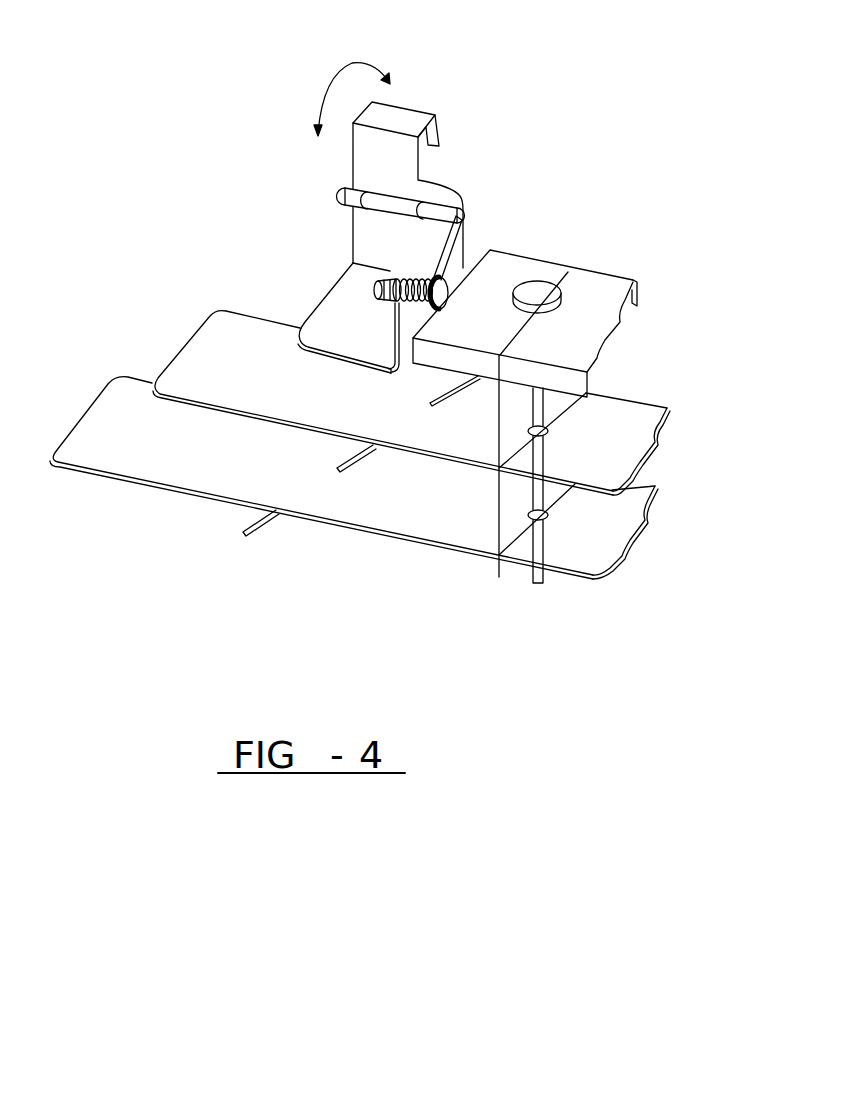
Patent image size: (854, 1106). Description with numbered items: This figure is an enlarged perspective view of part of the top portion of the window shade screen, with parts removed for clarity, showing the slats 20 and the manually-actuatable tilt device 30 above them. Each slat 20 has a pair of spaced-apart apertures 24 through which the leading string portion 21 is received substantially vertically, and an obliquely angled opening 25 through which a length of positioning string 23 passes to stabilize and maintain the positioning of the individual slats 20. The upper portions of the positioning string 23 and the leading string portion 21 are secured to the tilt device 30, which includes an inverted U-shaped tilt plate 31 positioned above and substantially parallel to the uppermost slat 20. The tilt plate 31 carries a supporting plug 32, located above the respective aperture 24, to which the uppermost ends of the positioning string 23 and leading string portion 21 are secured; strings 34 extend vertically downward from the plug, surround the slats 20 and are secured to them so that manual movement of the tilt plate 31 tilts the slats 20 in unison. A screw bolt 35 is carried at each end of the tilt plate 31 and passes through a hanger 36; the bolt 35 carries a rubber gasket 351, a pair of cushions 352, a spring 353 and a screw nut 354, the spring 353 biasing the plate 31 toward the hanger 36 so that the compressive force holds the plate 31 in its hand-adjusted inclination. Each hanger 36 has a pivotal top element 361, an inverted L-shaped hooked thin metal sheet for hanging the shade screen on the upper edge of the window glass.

The slats 20 is at (227, 333).
The leading string portion 21 is at (543, 578).
The positioning string 23 is at (252, 527).
The spaced-apart apertures 24 is at (543, 428).
The obliquely angled opening 25 is at (337, 468).
The manually-actuatable tilt device 30 is at (535, 237).
The tilt plate 31 is at (603, 293).
The supporting plug 32 is at (535, 292).
The strings 34 is at (570, 272).
The screw bolt 35 is at (453, 192).
The rubber gasket 351 is at (437, 293).
The cushions 352 is at (418, 292).
The spring 353 is at (400, 287).
The screw nut 354 is at (388, 283).
The hanger 36 is at (357, 192).
The pivotal top element 361 is at (397, 115).